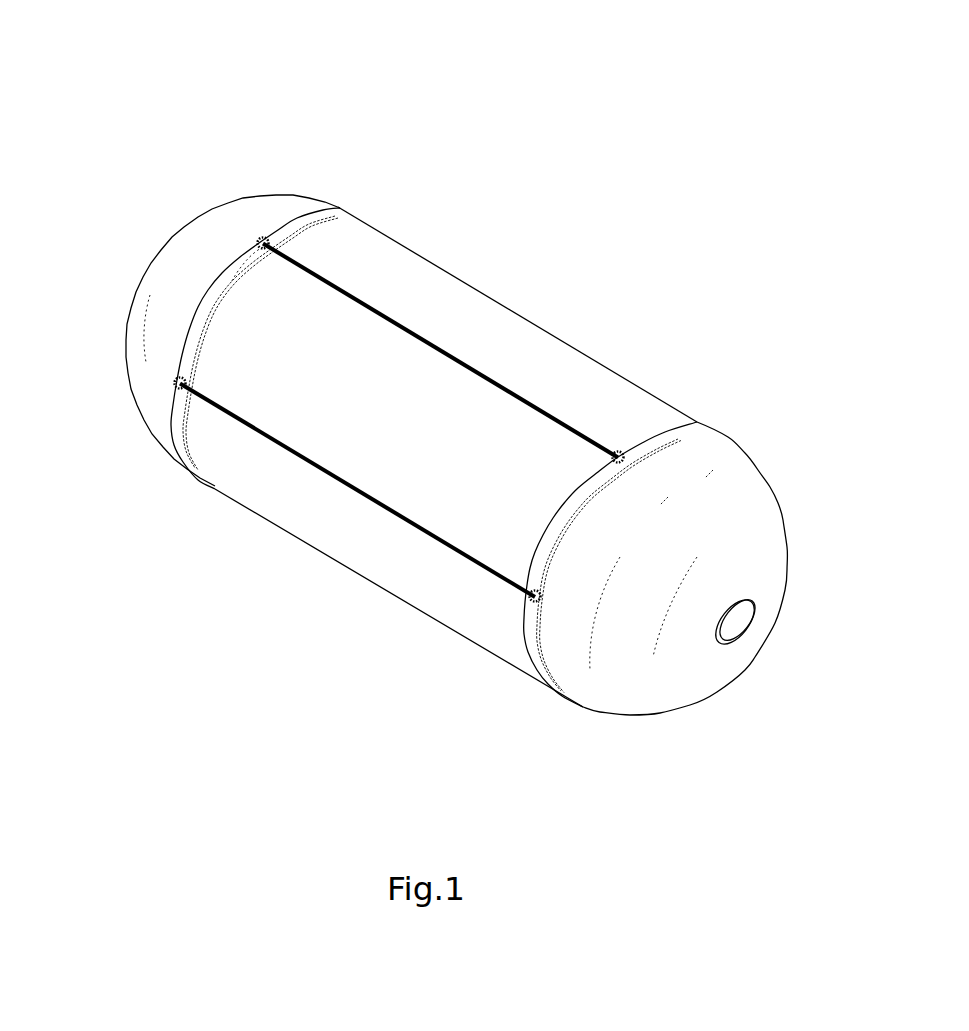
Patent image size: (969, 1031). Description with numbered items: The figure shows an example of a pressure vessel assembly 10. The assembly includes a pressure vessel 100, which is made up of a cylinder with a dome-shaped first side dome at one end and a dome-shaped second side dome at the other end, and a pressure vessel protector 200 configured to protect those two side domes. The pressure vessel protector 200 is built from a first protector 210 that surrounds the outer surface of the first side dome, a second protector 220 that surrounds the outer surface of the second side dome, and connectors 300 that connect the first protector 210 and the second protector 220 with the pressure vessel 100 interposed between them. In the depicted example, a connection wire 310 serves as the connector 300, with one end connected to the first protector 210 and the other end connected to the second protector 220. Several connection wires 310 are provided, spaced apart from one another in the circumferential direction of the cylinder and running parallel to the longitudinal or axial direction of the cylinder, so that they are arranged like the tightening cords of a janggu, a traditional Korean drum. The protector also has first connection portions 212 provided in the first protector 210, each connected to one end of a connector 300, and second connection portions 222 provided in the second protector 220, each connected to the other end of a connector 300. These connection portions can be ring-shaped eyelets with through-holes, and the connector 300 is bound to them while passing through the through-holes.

The pressure vessel assembly 10 is at (208, 41).
The pressure vessel 100 is at (520, 313).
The pressure vessel protector 200 is at (712, 544).
The first protector 210 is at (195, 342).
The first connection portions 212 is at (174, 388).
The second protector 220 is at (683, 675).
The second connection portions 222 is at (625, 449).
The connectors 300 is at (397, 456).
The connection wire 310 is at (562, 424).